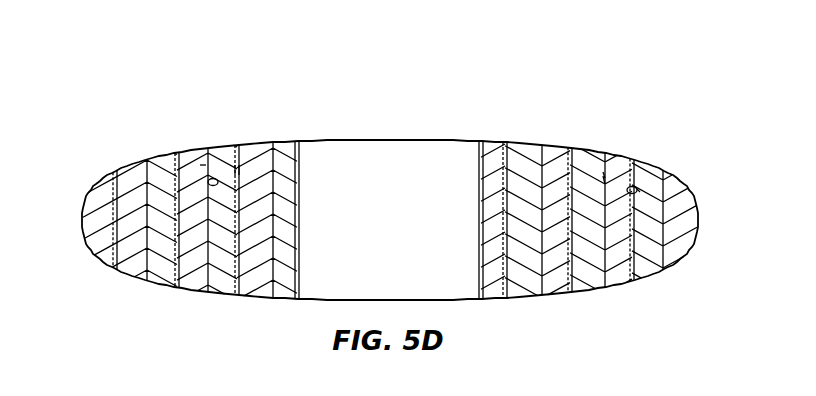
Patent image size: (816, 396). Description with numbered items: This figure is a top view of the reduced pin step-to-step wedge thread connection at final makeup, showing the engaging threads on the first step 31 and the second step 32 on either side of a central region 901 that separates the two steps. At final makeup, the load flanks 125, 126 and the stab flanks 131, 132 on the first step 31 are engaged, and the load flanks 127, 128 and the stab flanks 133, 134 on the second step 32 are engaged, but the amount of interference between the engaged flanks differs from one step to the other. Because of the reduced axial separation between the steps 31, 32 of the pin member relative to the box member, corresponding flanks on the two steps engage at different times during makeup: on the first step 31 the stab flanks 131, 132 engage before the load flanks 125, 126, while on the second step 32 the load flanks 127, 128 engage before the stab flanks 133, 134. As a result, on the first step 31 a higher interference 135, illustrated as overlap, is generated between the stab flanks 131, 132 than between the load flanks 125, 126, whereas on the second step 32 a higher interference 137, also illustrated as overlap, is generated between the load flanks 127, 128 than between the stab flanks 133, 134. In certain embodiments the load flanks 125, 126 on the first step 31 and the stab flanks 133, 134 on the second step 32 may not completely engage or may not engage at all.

The first step 31 is at (315, 95).
The second step 32 is at (712, 97).
The central unlaminated region 901 is at (468, 126).
The load flank 125 is at (203, 162).
The load flank 126 is at (208, 181).
The load flank 127 is at (638, 191).
The load flank 128 is at (635, 186).
The stab flank 131 is at (238, 170).
The stab flank 132 is at (241, 171).
The stab flank 133 is at (603, 180).
The stab flank 134 is at (603, 177).
The higher interference 135 is at (114, 268).
The higher interference 137 is at (505, 298).